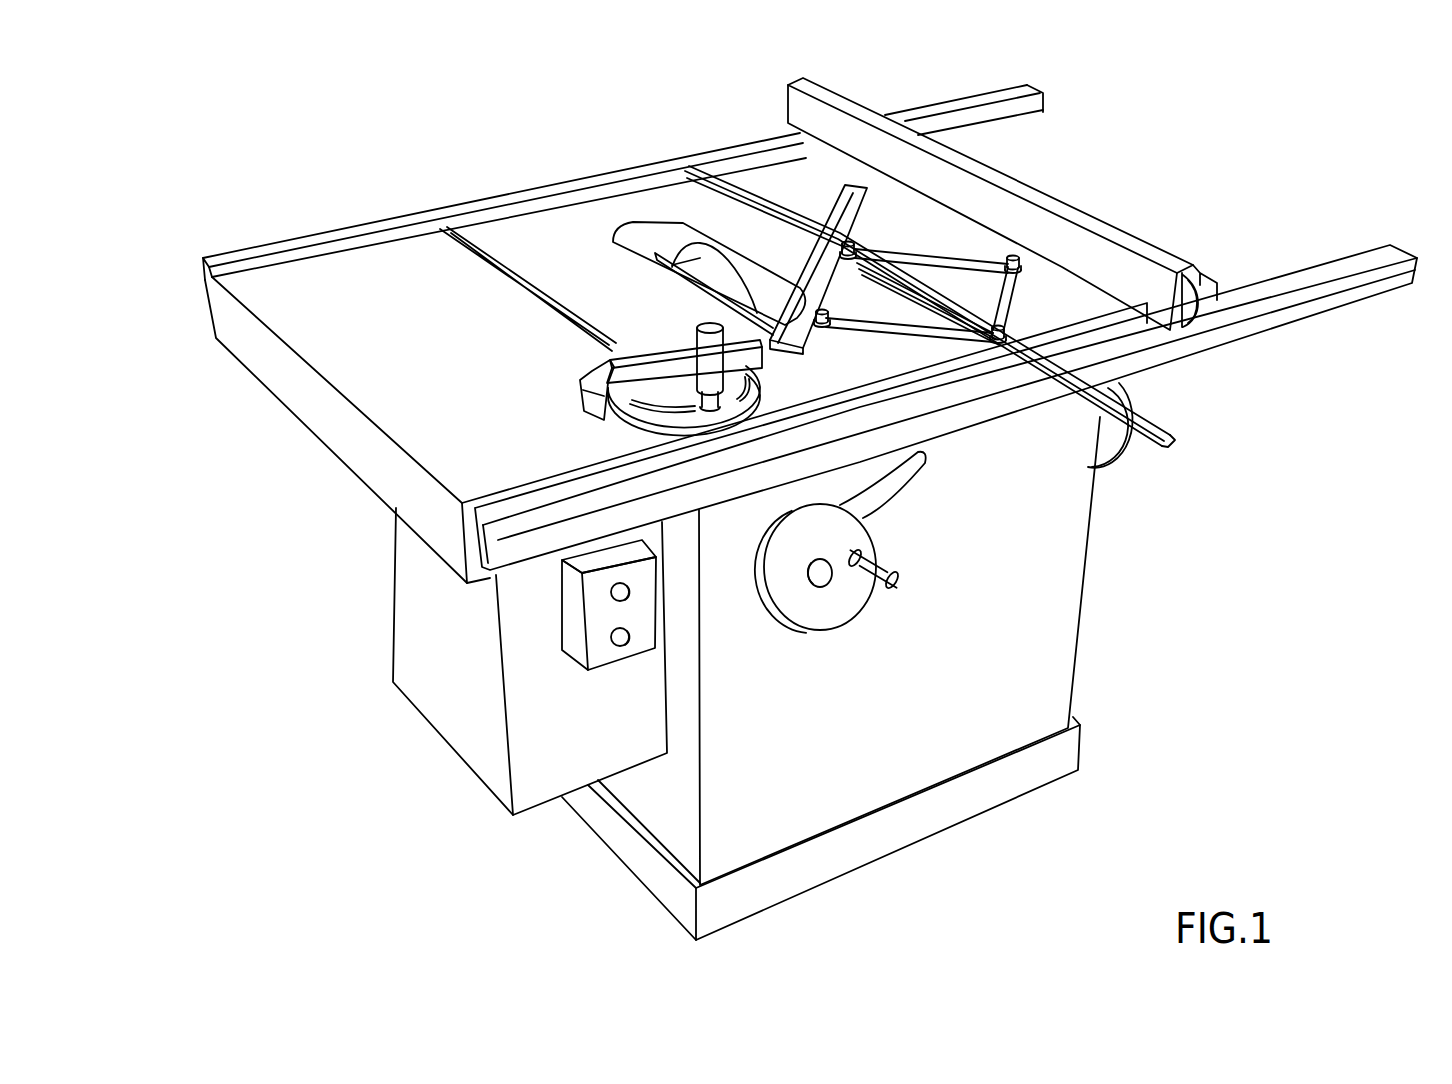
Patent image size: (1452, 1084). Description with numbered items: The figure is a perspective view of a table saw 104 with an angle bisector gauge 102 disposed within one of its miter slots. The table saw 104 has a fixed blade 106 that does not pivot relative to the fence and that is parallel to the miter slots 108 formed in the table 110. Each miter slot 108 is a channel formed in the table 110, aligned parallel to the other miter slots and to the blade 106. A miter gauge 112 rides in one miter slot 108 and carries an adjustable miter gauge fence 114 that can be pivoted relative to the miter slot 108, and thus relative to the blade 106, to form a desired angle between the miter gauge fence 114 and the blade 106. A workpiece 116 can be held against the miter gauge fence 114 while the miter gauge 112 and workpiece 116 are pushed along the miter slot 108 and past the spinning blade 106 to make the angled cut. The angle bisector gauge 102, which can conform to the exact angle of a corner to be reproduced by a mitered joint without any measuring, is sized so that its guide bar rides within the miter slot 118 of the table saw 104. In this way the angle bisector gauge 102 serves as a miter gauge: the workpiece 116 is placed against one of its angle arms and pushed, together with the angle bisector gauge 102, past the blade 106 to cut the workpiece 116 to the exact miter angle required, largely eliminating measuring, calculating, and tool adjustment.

The angle bisector gauge 102 is at (935, 252).
The table saw 104 is at (298, 130).
The blade 106 is at (700, 258).
The miter slot 108 is at (457, 233).
The table 110 is at (345, 282).
The miter gauge 112 is at (610, 432).
The miter gauge fence 114 is at (614, 396).
The workpiece 116 is at (840, 213).
The miter slot 118 is at (725, 183).